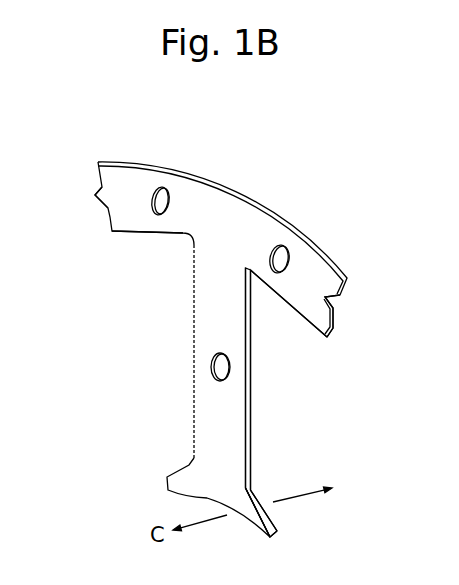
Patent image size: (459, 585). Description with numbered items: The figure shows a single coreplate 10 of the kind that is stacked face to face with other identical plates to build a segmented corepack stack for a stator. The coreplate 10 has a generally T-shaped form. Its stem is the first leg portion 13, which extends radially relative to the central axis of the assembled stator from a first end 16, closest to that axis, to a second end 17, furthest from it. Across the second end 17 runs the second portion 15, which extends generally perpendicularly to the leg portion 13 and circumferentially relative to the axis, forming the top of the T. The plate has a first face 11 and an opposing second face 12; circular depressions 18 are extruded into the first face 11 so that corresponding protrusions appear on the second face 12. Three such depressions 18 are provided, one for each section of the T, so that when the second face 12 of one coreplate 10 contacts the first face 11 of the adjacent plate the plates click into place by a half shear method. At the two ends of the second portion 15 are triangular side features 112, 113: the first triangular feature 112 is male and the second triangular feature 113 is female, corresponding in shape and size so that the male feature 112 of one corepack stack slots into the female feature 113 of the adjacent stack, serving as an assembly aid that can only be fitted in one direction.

The coreplate 10 is at (327, 173).
The first face 11 is at (200, 306).
The second face 12 is at (252, 397).
The first leg portion 13 is at (252, 440).
The second portion 15 is at (152, 234).
The first end 16 is at (275, 535).
The second end 17 is at (205, 176).
The circular depressions 18 is at (163, 186).
The first triangular side feature 112 is at (95, 196).
The second triangular side feature 113 is at (333, 300).